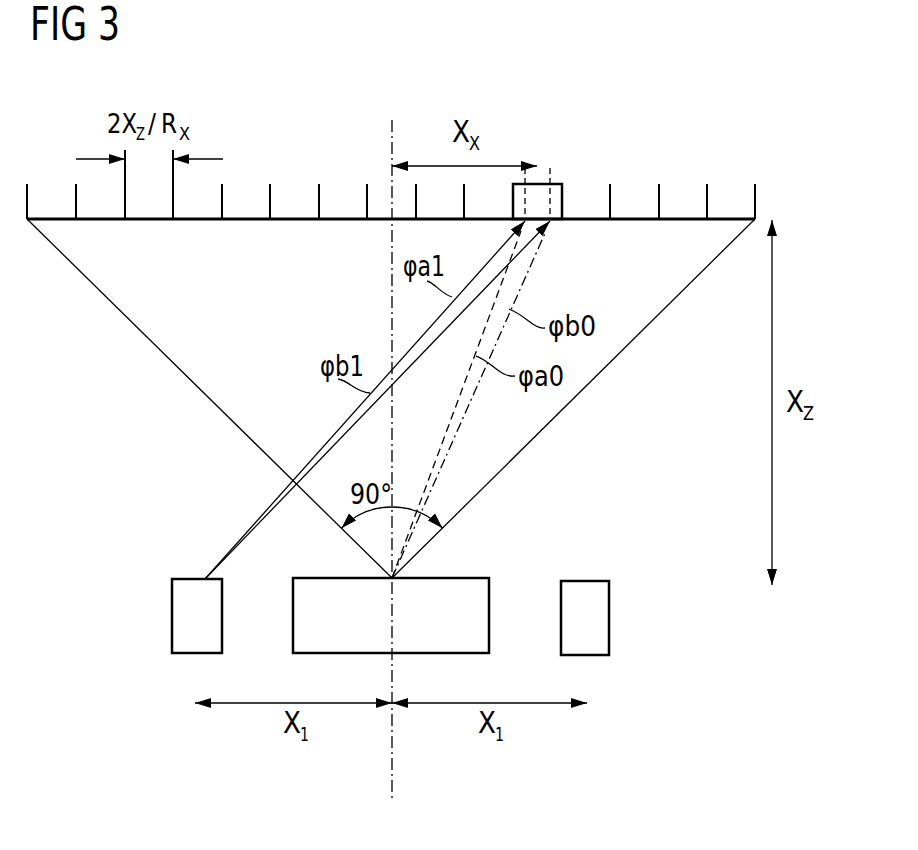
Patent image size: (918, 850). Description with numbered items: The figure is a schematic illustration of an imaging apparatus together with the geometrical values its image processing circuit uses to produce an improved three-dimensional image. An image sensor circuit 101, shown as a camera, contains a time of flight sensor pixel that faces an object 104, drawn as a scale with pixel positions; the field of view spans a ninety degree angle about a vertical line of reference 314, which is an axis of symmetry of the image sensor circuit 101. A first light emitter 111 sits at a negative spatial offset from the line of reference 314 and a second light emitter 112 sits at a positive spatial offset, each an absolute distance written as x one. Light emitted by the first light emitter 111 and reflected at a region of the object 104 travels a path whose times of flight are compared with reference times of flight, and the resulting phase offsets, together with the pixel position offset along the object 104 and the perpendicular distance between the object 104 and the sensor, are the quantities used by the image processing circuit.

The object 104 is at (683, 218).
The image sensor circuit 101 is at (490, 614).
The first light emitter 111 is at (196, 654).
The second light emitter 112 is at (585, 656).
The line of reference 314 is at (393, 760).